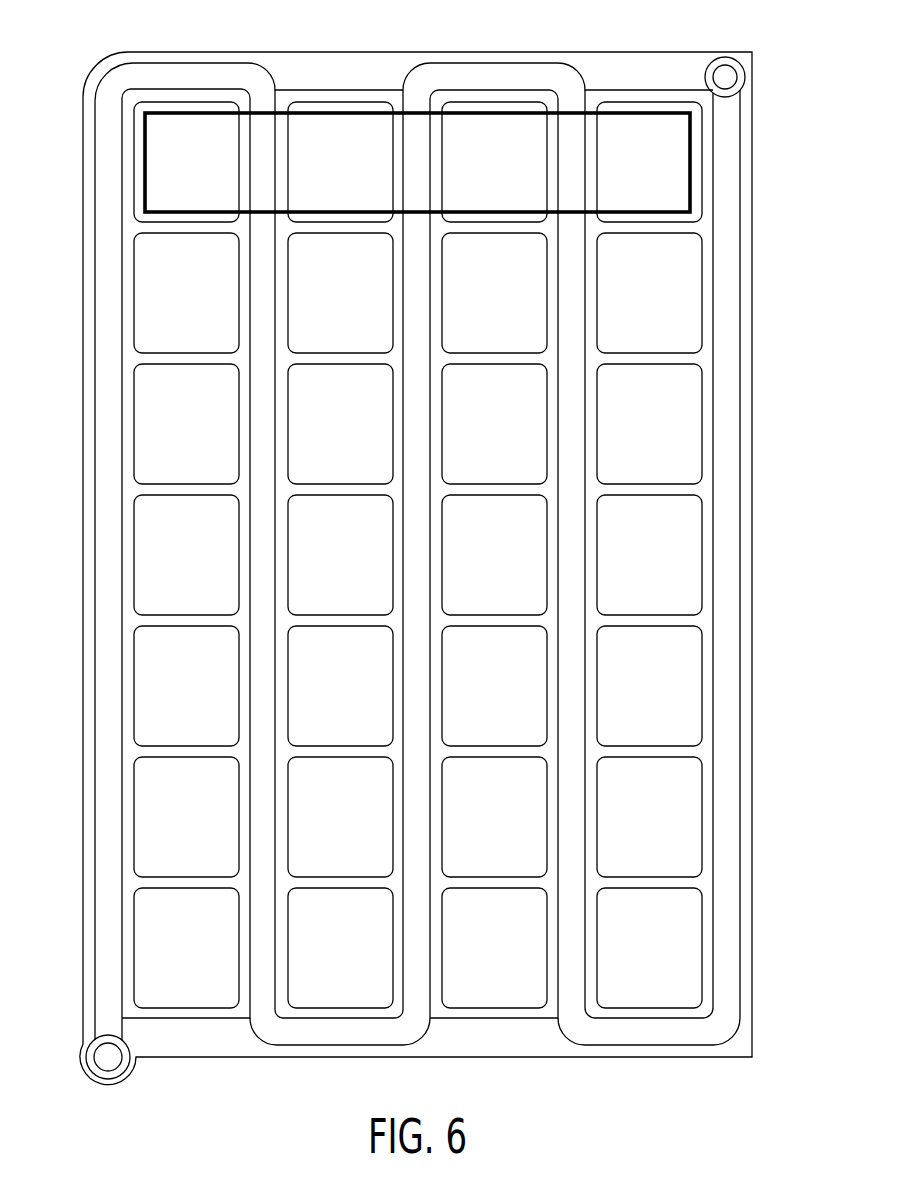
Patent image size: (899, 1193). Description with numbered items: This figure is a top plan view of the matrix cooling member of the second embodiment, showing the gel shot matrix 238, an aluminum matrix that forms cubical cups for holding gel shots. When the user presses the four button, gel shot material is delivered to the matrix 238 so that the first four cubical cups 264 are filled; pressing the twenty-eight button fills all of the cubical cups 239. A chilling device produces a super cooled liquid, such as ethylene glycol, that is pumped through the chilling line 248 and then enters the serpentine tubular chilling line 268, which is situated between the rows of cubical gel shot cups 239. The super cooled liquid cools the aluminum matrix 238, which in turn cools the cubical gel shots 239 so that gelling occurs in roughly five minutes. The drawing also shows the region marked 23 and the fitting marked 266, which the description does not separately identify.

The battery cell 23 is at (658, 175).
The gel shot matrix 238 is at (121, 354).
The cubical cups 239 is at (155, 432).
The chilling line 248 is at (725, 77).
The cubical cups 264 is at (187, 100).
The inlet port 266 is at (102, 1057).
The serpentine tubular chilling line 268 is at (107, 590).